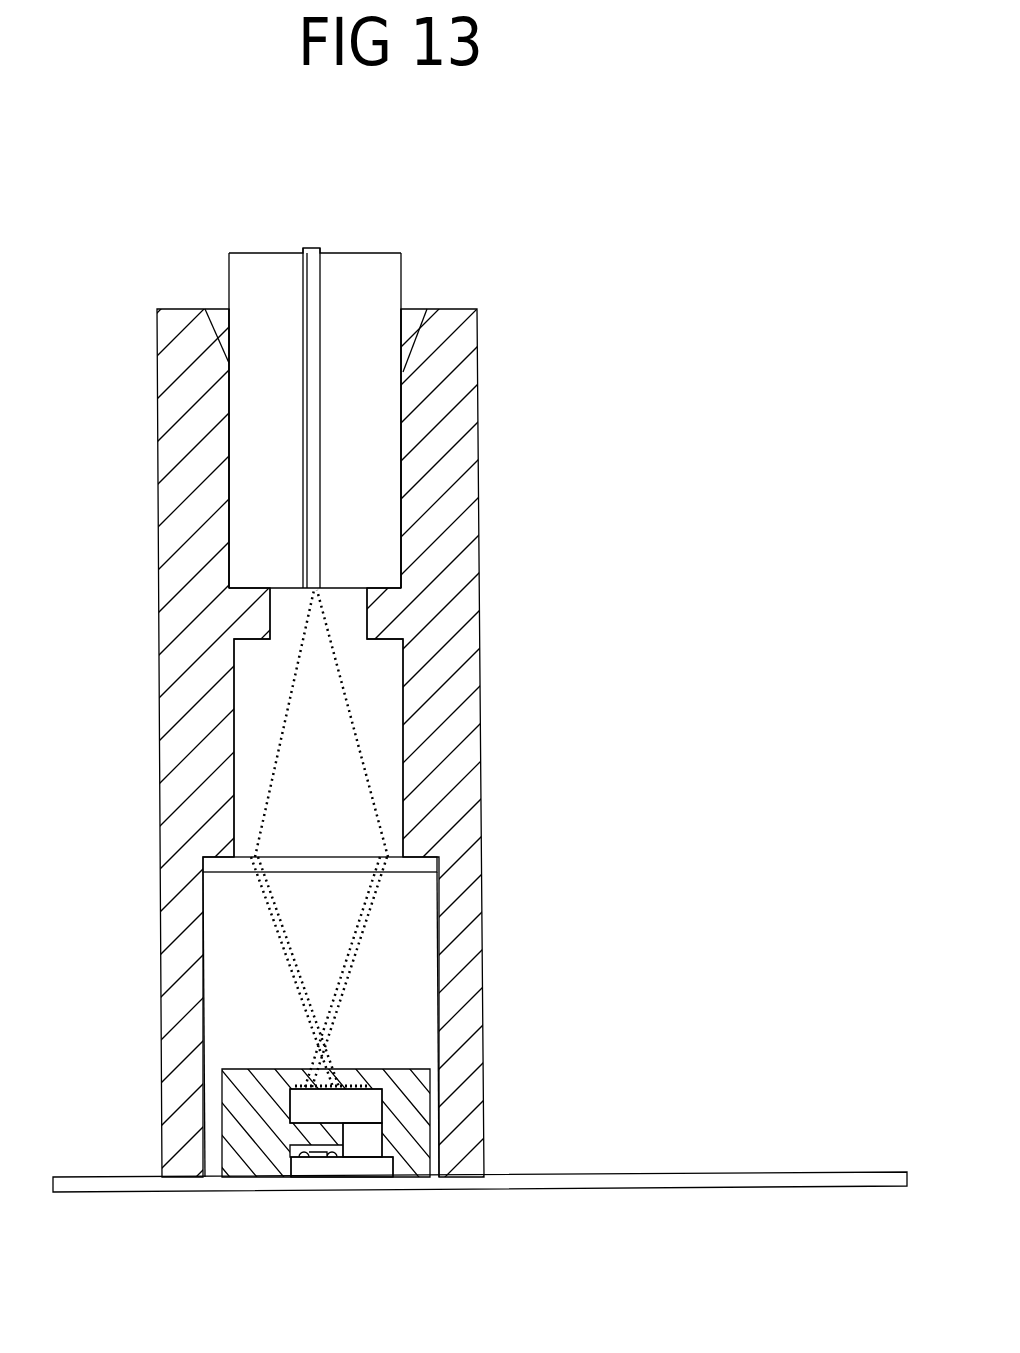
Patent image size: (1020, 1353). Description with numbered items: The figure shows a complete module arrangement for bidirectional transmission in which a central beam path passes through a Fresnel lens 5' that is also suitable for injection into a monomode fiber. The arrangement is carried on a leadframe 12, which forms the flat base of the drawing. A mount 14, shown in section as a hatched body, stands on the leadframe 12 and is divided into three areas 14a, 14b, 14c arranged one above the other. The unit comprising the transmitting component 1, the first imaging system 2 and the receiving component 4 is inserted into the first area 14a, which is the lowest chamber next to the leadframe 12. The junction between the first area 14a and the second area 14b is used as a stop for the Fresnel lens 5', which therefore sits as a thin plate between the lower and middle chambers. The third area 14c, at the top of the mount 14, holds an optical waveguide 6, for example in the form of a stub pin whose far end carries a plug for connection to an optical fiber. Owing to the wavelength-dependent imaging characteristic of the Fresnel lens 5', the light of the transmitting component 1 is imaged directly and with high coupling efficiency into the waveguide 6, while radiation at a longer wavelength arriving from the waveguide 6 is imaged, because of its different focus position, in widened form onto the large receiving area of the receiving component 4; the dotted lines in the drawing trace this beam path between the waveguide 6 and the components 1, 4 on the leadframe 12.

The transmitting component 1 is at (246, 1099).
The first imaging system 2 is at (370, 1113).
The receiving component 4 is at (370, 1070).
The Fresnel lens 5' is at (383, 841).
The optical waveguide 6 is at (382, 278).
The leadframe 12 is at (600, 1182).
The mount 14 is at (450, 715).
The first area 14a is at (423, 945).
The second area 14b is at (388, 790).
The third area 14c is at (405, 518).